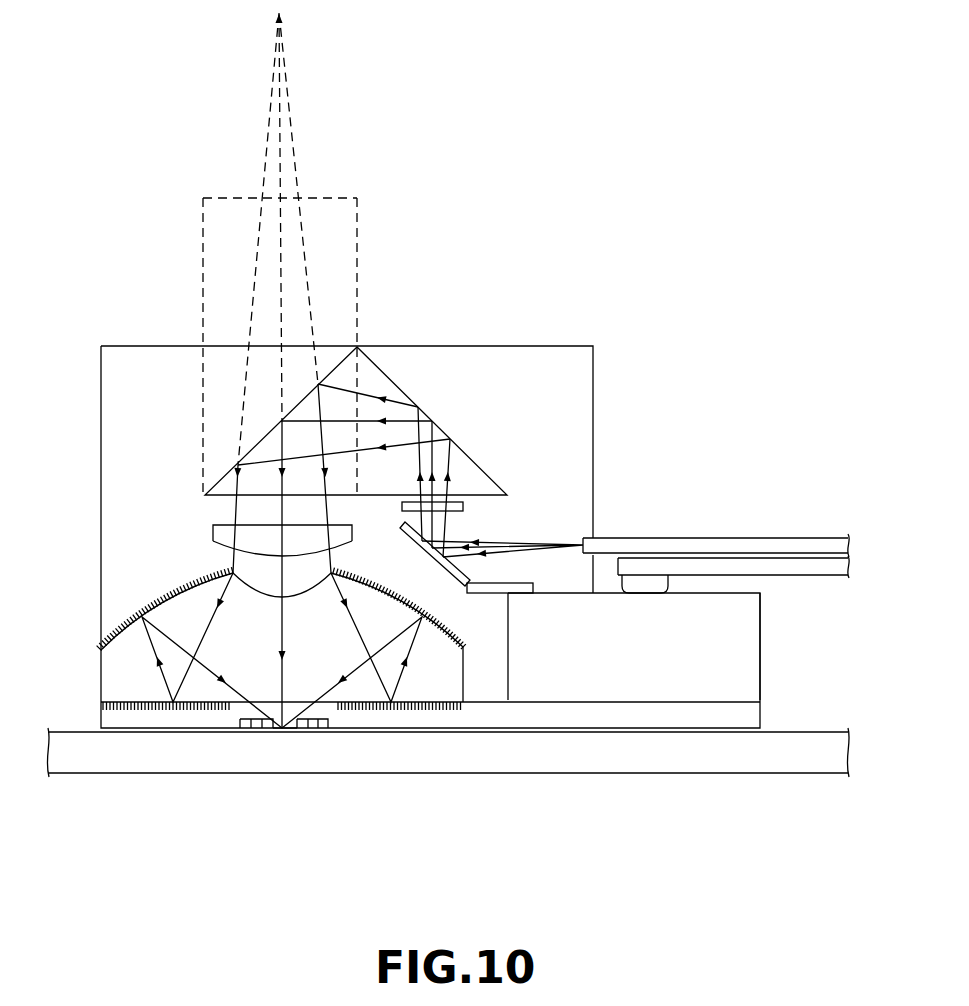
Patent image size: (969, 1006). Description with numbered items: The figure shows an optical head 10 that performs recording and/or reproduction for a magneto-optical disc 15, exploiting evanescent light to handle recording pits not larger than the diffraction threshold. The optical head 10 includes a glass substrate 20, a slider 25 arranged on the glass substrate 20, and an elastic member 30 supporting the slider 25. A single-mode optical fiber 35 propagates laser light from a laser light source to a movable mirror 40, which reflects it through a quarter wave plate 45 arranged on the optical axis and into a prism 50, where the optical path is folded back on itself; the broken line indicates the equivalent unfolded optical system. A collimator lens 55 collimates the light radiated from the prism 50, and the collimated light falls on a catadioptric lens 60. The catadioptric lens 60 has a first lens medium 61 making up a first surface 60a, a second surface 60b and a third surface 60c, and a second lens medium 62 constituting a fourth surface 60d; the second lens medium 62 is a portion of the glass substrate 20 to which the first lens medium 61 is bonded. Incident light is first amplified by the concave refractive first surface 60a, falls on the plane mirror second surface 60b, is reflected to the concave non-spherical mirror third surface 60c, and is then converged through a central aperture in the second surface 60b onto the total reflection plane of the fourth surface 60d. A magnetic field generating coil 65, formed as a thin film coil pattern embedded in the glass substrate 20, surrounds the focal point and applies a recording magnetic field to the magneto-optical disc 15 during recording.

The optical head 10 is at (578, 318).
The magneto-optical disc 15 is at (100, 755).
The glass substrate 20 is at (752, 712).
The slider 25 is at (752, 658).
The elastic member 30 is at (820, 568).
The optical fiber 35 is at (776, 545).
The movable mirror 40 is at (421, 546).
The quarter wave plate 45 is at (463, 506).
The prism 50 is at (472, 467).
The collimator lens 55 is at (215, 535).
The catadioptric lens 60 is at (264, 683).
The first surface 60a is at (305, 575).
The second surface 60b is at (120, 700).
The third surface 60c is at (177, 607).
The fourth surface 60d is at (292, 728).
The first lens medium 61 is at (445, 690).
The second lens medium 62 is at (418, 716).
The magnetic field generating coil 65 is at (257, 722).